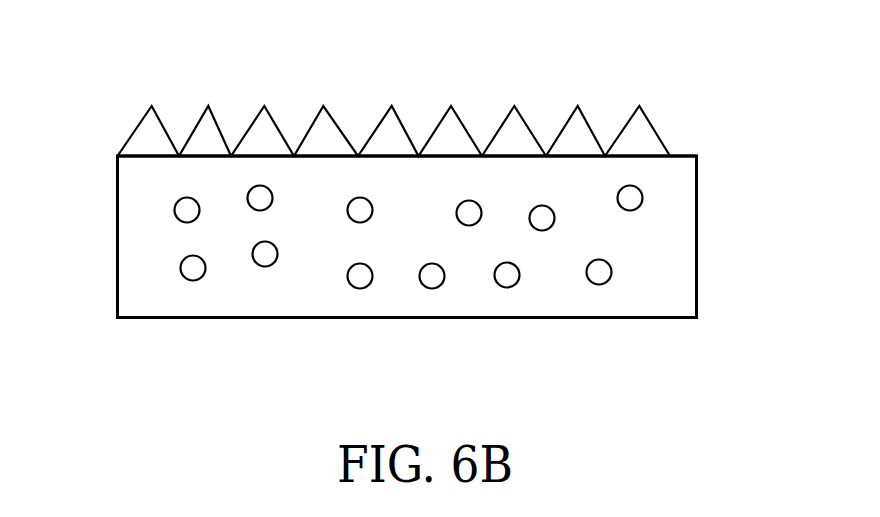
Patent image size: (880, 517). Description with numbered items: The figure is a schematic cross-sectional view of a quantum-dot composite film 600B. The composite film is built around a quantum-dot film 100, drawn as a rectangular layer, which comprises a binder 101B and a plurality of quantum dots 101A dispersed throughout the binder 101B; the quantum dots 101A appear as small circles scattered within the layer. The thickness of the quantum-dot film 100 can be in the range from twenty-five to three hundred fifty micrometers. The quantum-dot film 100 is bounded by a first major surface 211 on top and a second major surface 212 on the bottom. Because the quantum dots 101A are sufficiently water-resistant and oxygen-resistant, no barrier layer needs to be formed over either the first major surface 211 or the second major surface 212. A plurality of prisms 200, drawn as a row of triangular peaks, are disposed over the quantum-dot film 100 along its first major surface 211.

The quantum-dot composite film 600B is at (828, 38).
The quantum-dot film 100 is at (700, 218).
The quantum dots 101A is at (187, 209).
The binder 101B is at (162, 301).
The prisms 200 is at (396, 102).
The first major surface 211 is at (697, 155).
The second major surface 212 is at (517, 318).